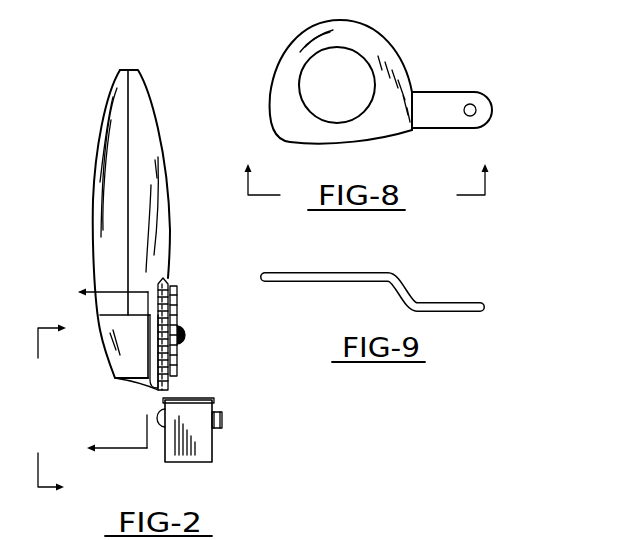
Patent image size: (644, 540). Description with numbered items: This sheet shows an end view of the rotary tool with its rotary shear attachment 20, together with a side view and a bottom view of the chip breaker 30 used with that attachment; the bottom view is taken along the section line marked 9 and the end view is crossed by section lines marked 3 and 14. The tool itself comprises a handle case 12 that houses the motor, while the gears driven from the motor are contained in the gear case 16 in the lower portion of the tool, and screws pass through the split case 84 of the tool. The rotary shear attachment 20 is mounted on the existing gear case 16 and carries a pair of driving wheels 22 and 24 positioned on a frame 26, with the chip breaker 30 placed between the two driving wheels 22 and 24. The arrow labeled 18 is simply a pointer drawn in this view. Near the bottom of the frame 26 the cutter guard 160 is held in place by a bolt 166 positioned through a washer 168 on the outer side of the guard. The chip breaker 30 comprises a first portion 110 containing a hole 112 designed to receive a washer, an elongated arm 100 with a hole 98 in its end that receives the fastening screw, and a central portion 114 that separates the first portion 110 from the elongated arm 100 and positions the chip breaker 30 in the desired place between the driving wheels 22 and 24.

In FIG. 2, the handle case 12 is at (135, 97).
In FIG. 2, the split case 84 is at (142, 157).
In FIG. 2, the section line 3- 3 is at (103, 369).
In FIG. 2, the motor 14 is at (65, 409).
In FIG. 2, the gear case 16 is at (130, 362).
In FIG. 2, the driving wheel 22 is at (173, 364).
In FIG. 2, the chip breaker 30 is at (168, 278).
In FIG. 8, the chip breaker 30 is at (360, 33).
In FIG. 9, the chip breaker 30 is at (370, 272).
In FIG. 2, the rotary shear attachment 20 is at (200, 295).
In FIG. 2, the detent bump 18 is at (173, 337).
In FIG. 2, the driving wheel 24 is at (153, 398).
In FIG. 2, the frame 26 is at (132, 431).
In FIG. 2, the cutter guard 160 is at (202, 454).
In FIG. 2, the washer 168 is at (213, 405).
In FIG. 2, the bolt 166 is at (216, 422).
In FIG. 8, the first portion 110 is at (310, 35).
In FIG. 9, the first portion 110 is at (300, 270).
In FIG. 8, the hole 112 is at (300, 79).
In FIG. 8, the elongated arm 100 is at (427, 110).
In FIG. 9, the elongated arm 100 is at (438, 303).
In FIG. 8, the hole 98 is at (472, 104).
In FIG. 8, the central portion 114 is at (412, 132).
In FIG. 9, the central portion 114 is at (393, 298).
In FIG. 8, the section line 9- 9 is at (366, 161).